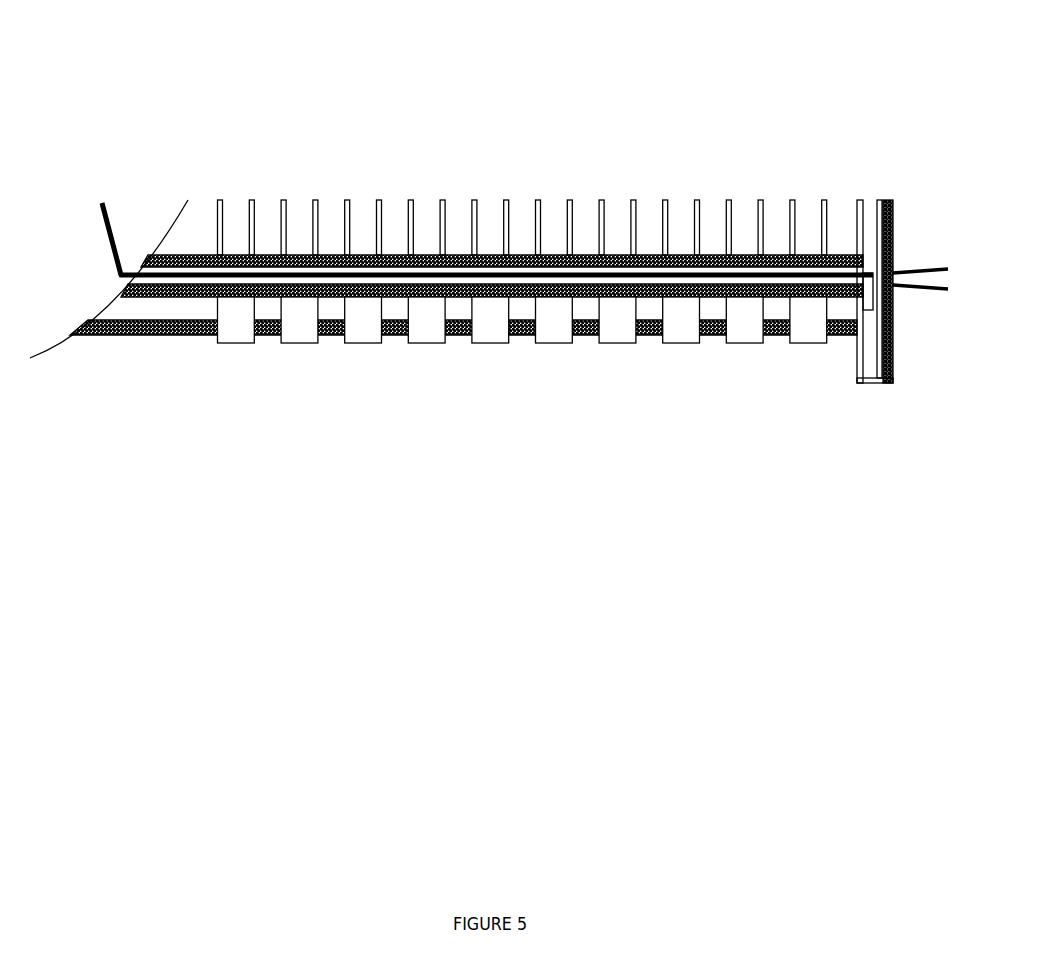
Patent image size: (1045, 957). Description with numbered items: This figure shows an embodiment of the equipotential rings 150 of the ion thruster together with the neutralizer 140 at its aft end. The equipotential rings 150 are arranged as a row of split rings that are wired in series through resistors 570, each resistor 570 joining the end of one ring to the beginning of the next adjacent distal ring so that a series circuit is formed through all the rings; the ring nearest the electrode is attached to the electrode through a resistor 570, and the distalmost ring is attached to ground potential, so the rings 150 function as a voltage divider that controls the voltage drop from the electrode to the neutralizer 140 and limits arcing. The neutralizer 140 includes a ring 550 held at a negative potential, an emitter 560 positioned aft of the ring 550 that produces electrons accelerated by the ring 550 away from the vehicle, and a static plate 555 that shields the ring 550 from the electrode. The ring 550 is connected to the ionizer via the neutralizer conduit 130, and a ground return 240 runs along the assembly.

The neutralizer conduit 130 is at (328, 257).
The neutralizer 140 is at (872, 227).
The equipotential rings 150 is at (612, 225).
The ground return 240 is at (787, 270).
The ring 550 is at (897, 208).
The static plate 555 is at (880, 347).
The emitter 560 is at (887, 372).
The resistors 570 is at (582, 323).